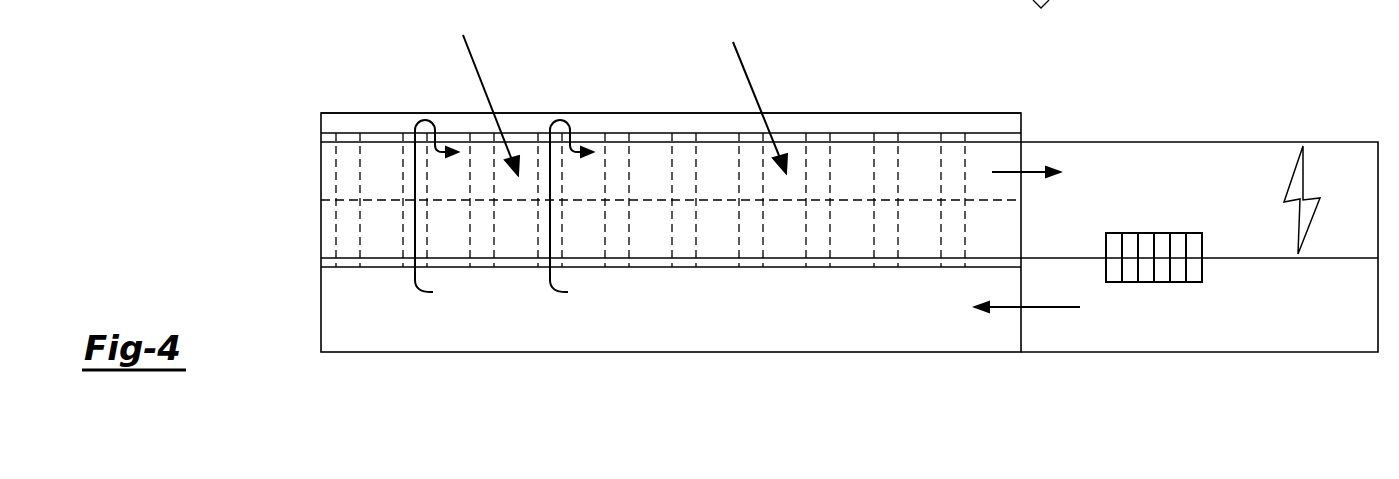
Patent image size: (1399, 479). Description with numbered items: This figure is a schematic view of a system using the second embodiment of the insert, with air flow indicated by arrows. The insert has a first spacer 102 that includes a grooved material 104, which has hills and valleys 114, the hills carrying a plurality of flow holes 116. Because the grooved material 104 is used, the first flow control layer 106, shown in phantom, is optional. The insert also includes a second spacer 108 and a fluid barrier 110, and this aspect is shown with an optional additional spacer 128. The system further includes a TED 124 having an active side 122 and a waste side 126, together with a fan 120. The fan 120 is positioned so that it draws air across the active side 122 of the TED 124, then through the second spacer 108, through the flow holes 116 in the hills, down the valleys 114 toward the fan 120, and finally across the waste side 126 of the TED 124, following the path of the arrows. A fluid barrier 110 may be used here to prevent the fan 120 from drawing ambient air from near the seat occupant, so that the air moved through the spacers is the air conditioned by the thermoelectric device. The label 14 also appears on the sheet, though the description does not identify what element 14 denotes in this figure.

The manufacturing line 14 is at (1040, 18).
The first spacer 102 is at (330, 178).
The grooved material 104 is at (726, 218).
The first flow control layer 106 is at (321, 138).
The second spacer 108 is at (321, 263).
The fluid barrier 110 is at (328, 325).
The valleys 114 is at (850, 152).
The flow holes 116 is at (349, 152).
The fan 120 is at (1303, 146).
The active side 122 is at (1144, 282).
The TED 124 is at (1182, 282).
The waste side 126 is at (1145, 233).
The additional spacer 128 is at (603, 113).